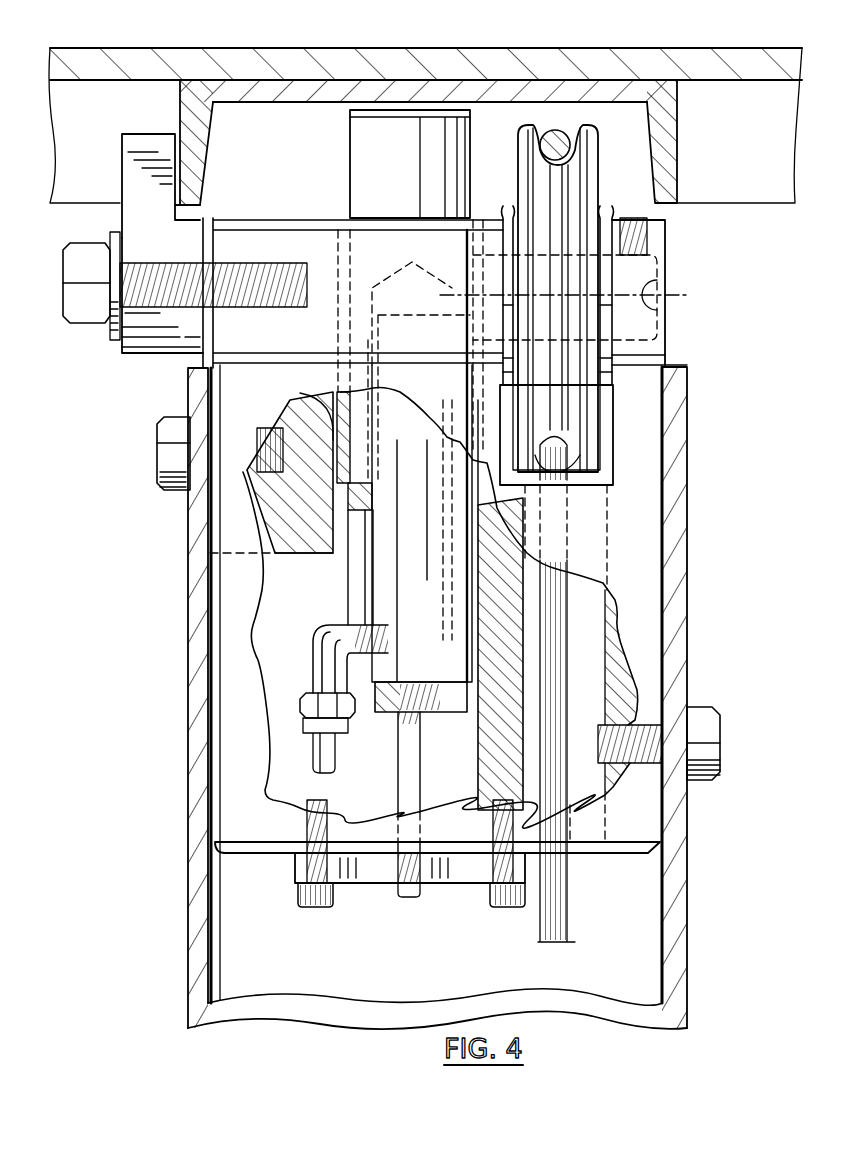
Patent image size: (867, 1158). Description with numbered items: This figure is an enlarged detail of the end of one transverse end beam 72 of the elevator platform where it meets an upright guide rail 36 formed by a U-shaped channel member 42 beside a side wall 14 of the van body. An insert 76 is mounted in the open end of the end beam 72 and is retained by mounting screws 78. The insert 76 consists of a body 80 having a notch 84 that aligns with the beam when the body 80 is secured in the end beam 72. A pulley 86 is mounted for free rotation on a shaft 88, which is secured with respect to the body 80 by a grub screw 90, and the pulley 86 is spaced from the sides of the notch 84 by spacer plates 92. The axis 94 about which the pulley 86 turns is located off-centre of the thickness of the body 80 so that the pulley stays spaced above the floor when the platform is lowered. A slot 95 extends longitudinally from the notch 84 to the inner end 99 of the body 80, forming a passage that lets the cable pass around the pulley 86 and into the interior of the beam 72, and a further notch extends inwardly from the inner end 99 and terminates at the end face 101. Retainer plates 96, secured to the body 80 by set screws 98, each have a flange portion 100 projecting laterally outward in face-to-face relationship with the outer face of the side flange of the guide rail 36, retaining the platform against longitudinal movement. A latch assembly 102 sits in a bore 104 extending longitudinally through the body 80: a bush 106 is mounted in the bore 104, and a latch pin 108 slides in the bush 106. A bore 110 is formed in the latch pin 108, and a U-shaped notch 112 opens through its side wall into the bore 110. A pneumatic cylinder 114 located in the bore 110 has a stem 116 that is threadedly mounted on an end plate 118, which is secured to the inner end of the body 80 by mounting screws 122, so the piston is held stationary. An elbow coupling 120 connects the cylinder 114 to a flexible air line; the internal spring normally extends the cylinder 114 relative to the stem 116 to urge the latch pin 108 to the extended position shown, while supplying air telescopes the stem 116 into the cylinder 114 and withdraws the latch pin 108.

The upright side walls 14 is at (205, 62).
The upright guide rail 36 is at (405, 90).
The U-shaped channel member 42 is at (262, 90).
The transverse end beam 72 is at (680, 612).
The insert 76 is at (640, 534).
The mounting screws 78 is at (700, 716).
The body 80 is at (645, 447).
The notch 84 is at (620, 415).
The pulley 86 is at (588, 175).
The shaft 88 is at (635, 275).
The grub screw 90 is at (665, 236).
The spacer plates 92 is at (510, 218).
The axis 94 is at (655, 309).
The slot 95 is at (590, 642).
The retainer plates 96 is at (130, 213).
The set screws 98 is at (96, 312).
The inner end 99 is at (262, 618).
The flange portion 100 is at (133, 153).
The end face 101 is at (283, 553).
The latch assembly 102 is at (335, 185).
The bore 104 is at (340, 258).
The bush 106 is at (336, 393).
The latch pin 108 is at (372, 156).
The bore 110 is at (392, 276).
The U-shaped notch 112 is at (357, 530).
The pneumatic cylinder 114 is at (385, 592).
The stem 116 is at (410, 752).
The end plate 118 is at (460, 875).
The elbow coupling 120 is at (322, 656).
The mounting screws 122 is at (330, 905).